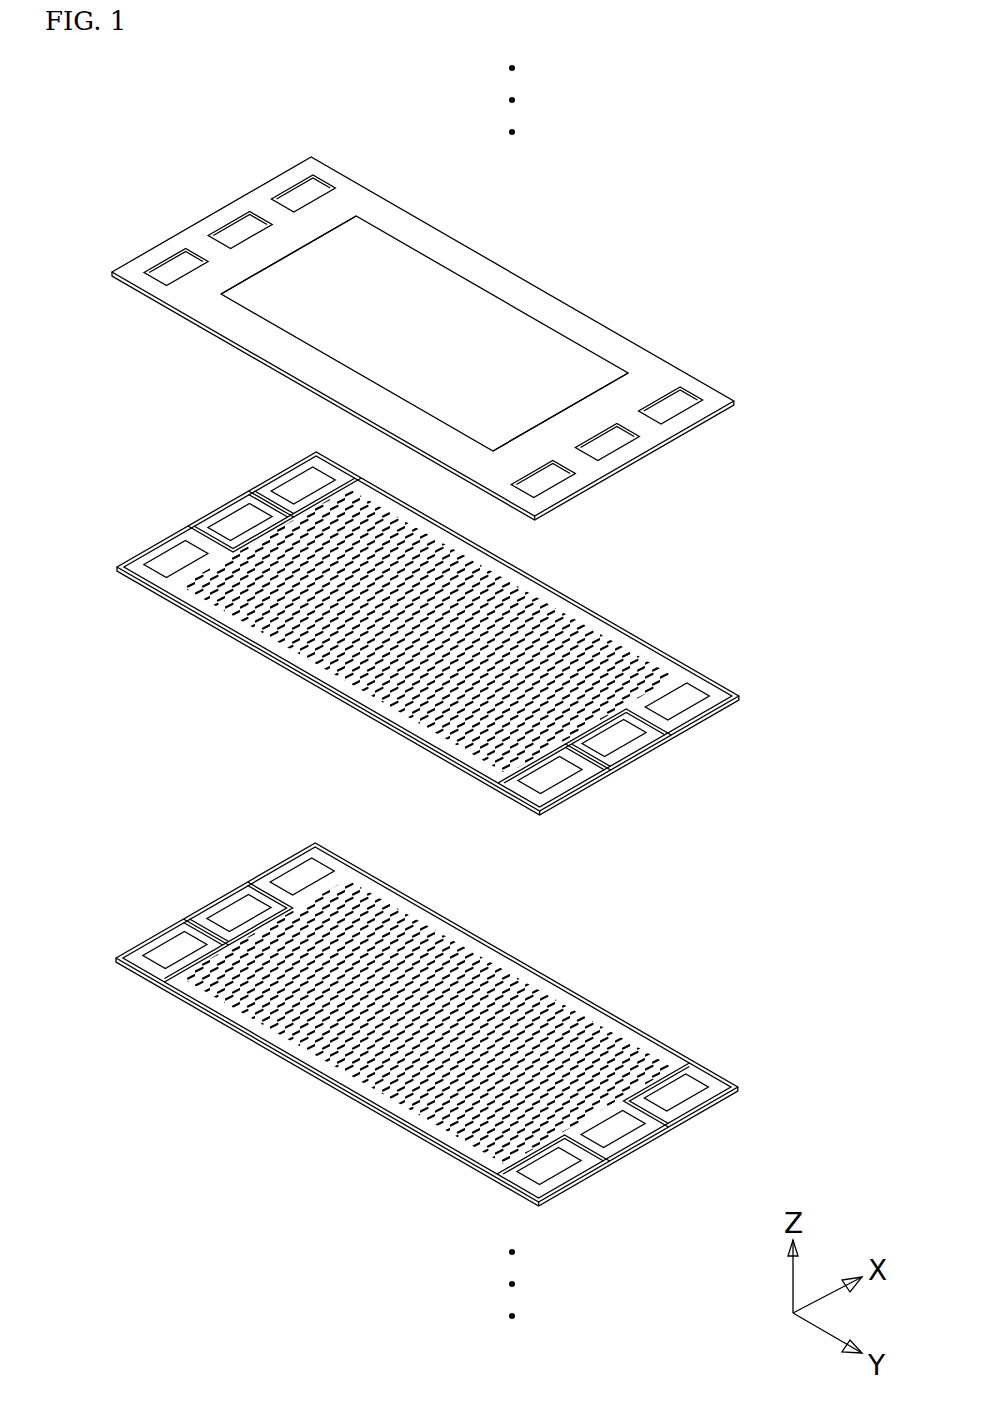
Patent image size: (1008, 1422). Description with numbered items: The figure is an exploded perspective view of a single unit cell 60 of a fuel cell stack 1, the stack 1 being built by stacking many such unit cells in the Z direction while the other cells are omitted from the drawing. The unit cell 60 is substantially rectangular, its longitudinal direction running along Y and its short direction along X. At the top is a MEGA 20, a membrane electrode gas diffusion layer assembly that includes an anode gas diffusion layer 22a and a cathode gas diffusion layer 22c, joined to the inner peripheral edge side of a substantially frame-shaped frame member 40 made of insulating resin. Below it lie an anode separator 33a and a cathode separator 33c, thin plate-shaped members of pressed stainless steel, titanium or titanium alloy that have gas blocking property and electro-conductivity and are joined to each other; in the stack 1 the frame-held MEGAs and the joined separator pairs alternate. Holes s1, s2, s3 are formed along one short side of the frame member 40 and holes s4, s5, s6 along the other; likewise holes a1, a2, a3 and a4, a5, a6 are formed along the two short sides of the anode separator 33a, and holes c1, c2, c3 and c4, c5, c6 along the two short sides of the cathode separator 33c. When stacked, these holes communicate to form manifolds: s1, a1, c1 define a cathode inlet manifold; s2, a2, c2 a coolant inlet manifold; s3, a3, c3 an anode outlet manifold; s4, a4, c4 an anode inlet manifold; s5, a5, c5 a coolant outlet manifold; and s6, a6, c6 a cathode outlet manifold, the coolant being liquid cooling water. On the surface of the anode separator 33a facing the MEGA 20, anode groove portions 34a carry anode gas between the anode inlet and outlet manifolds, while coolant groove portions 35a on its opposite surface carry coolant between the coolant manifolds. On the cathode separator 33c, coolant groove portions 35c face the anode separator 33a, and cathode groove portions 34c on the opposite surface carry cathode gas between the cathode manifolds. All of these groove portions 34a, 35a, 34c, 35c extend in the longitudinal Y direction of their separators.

The fuel cell stack 1 is at (817, 136).
The unit cell 60 is at (762, 329).
The frame member 40 is at (756, 406).
The MEGA 20 is at (281, 236).
The cathode gas diffusion layer 22c is at (262, 285).
The anode gas diffusion layer 22a is at (538, 405).
The hole s1 is at (303, 193).
The hole s2 is at (240, 230).
The hole s3 is at (176, 267).
The hole s4 is at (671, 405).
The hole s5 is at (607, 442).
The hole s6 is at (543, 479).
The anode separator 33a is at (172, 517).
The anode groove portions 34a is at (405, 650).
The coolant groove portions 35a is at (440, 745).
The hole a1 is at (303, 485).
The hole a2 is at (240, 522).
The hole a3 is at (176, 559).
The hole a4 is at (677, 701).
The hole a5 is at (614, 738).
The hole a6 is at (550, 775).
The cathode separator 33c is at (171, 910).
The cathode groove portions 34c is at (207, 1010).
The coolant groove portions 35c is at (410, 932).
The hole c1 is at (302, 876).
The hole c2 is at (239, 913).
The hole c3 is at (175, 950).
The hole c4 is at (676, 1092).
The hole c5 is at (613, 1129).
The hole c6 is at (549, 1166).